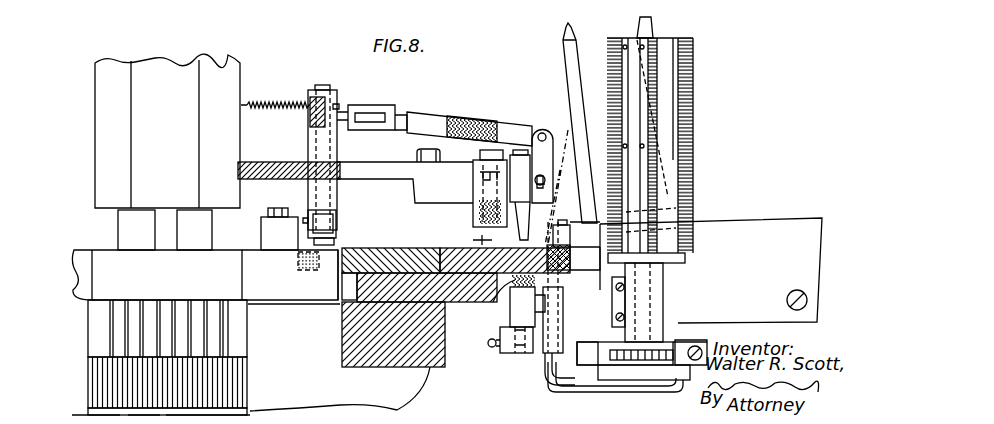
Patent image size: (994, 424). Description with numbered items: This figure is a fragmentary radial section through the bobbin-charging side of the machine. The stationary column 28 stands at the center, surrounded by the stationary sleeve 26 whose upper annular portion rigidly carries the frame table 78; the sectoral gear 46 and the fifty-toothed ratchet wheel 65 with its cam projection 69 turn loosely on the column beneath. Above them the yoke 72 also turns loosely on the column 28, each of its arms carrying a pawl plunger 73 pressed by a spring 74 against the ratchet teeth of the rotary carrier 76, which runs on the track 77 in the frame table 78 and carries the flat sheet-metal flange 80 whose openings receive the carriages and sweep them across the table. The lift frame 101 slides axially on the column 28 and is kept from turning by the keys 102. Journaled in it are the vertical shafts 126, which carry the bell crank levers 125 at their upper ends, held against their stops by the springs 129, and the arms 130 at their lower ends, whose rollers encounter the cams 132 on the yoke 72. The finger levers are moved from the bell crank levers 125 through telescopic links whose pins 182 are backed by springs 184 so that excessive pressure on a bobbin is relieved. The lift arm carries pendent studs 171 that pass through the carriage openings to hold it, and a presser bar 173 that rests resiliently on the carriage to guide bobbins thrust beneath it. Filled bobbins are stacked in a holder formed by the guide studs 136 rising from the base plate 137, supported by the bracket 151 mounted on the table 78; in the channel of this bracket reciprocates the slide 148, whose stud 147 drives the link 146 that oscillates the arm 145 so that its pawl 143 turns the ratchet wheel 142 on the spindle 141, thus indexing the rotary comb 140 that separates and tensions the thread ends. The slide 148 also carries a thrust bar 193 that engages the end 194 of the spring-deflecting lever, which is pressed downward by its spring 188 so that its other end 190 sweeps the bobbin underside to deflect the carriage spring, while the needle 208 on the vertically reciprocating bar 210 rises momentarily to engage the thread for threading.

The lift frame 101 is at (95, 133).
The keys 102 is at (157, 230).
The column 28 is at (212, 228).
The yoke 72 is at (157, 275).
The spring 74 is at (296, 270).
The pawl plunger 73 is at (335, 273).
The sectoral gear 46 is at (243, 331).
The ratchet wheel 65 is at (248, 380).
The cam projection 69 is at (252, 409).
The springs 129 is at (278, 100).
The vertical shafts 126 is at (339, 147).
The bell crank levers 125 is at (311, 112).
The arms 130 is at (338, 221).
The cams 132 is at (279, 229).
The flange 80 is at (430, 248).
The pins 182 is at (421, 113).
The springs 184 is at (484, 118).
The lever end 190 is at (553, 188).
The presser bar 173 is at (473, 189).
The pendent studs 171 is at (468, 235).
The rotary carrier 76 is at (373, 250).
The frame table 78 is at (464, 302).
The track 77 is at (342, 315).
The stationary sleeve 26 is at (430, 369).
The spring 188 is at (512, 310).
The lever ends 194 is at (496, 348).
The thrust bars 193 is at (522, 353).
The needle bar 210 is at (546, 362).
The base plates 137 is at (573, 188).
The needle 208 is at (589, 268).
The guide studs 136 is at (566, 72).
The rotary combs 140 is at (680, 143).
The brackets 151 is at (711, 270).
The spindles 141 is at (665, 287).
The arms 145 is at (624, 344).
The pawls 143 is at (590, 350).
The studs 147 is at (678, 385).
The links 146 is at (632, 372).
The slides 148 is at (708, 330).
The ratchet wheel 142 is at (692, 336).